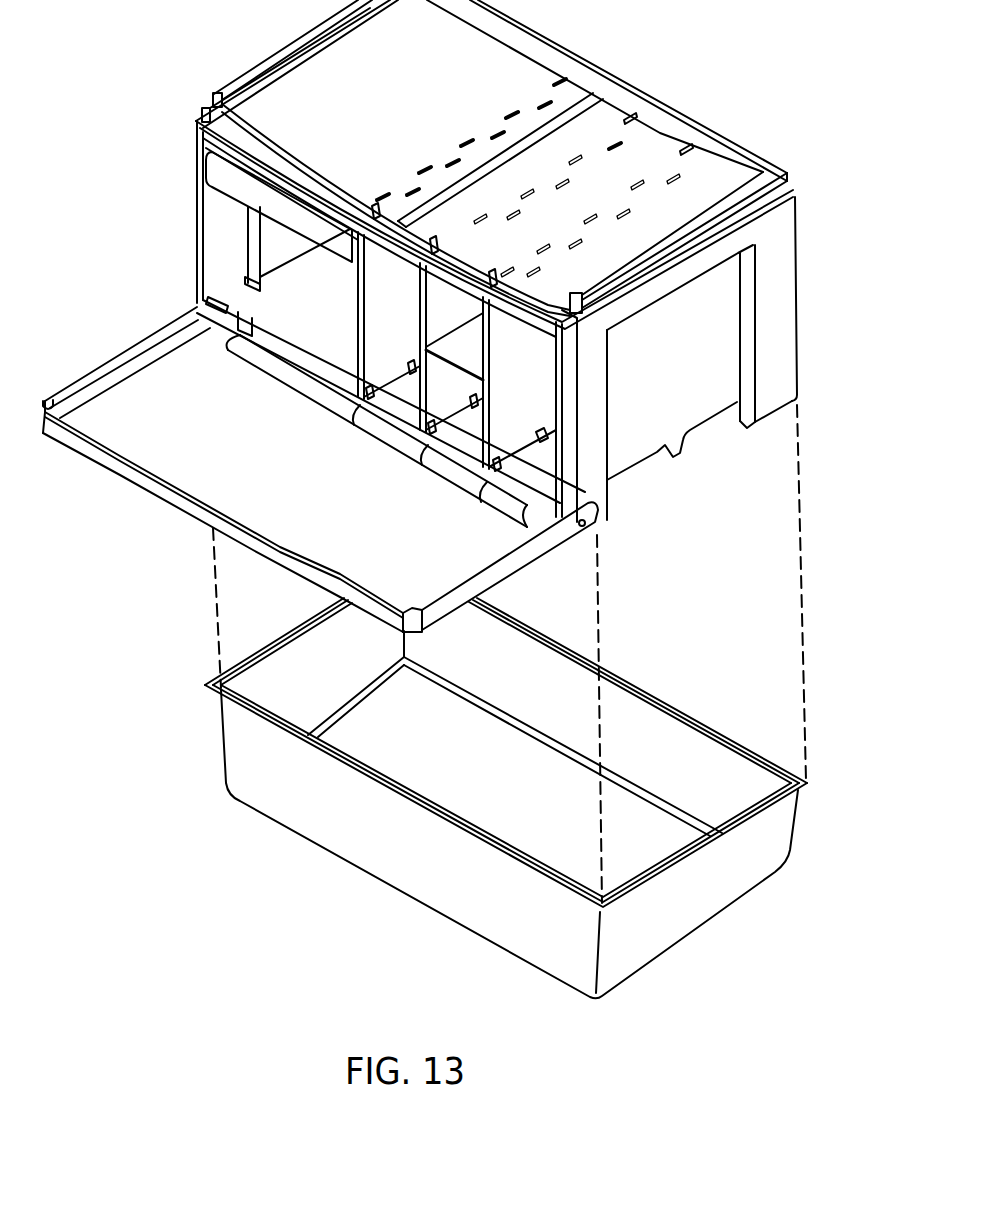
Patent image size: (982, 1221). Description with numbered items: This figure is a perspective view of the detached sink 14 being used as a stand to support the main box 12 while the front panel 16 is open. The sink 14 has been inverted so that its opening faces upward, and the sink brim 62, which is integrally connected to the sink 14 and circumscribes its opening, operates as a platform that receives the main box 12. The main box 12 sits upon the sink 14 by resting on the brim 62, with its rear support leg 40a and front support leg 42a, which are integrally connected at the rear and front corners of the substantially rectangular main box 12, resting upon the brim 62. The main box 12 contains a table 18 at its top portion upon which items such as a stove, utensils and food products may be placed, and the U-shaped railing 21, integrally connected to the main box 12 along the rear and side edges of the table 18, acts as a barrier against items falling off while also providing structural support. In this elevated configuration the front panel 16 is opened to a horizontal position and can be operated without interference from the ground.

The main box 12 is at (532, 315).
The sink 14 is at (537, 798).
The front panel 16 is at (232, 463).
The table 18 is at (421, 130).
The railing 21 is at (280, 60).
The rear support leg 40a is at (763, 408).
The front support leg 42a is at (602, 509).
The sink brim 62 is at (762, 756).